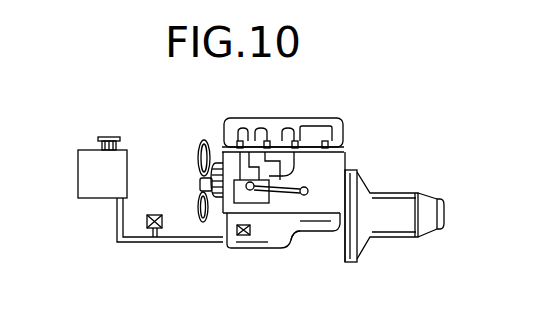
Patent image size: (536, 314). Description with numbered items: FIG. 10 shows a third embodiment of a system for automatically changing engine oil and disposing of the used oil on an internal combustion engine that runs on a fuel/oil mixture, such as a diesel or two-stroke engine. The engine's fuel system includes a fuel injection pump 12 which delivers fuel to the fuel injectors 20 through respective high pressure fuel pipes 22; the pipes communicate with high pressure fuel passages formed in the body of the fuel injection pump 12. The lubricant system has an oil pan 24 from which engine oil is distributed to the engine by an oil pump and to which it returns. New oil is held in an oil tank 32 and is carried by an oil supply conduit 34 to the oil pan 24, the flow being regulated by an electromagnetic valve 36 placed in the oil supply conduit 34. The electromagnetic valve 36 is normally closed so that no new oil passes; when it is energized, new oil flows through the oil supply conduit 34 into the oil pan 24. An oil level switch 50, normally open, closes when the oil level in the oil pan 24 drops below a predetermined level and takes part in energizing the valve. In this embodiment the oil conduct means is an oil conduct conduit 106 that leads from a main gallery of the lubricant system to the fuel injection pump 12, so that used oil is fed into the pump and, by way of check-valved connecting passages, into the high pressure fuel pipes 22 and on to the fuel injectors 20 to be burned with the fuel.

The fuel injection pump 12 is at (224, 215).
The fuel injectors 20 is at (245, 140).
The high pressure fuel pipes 22 is at (256, 170).
The oil pan 24 is at (265, 251).
The oil conduct conduit 106 is at (291, 229).
The oil level switch 50 is at (239, 237).
The oil tank 32 is at (97, 186).
The oil supply conduit 34 is at (135, 243).
The electromagnetic valve 36 is at (157, 214).